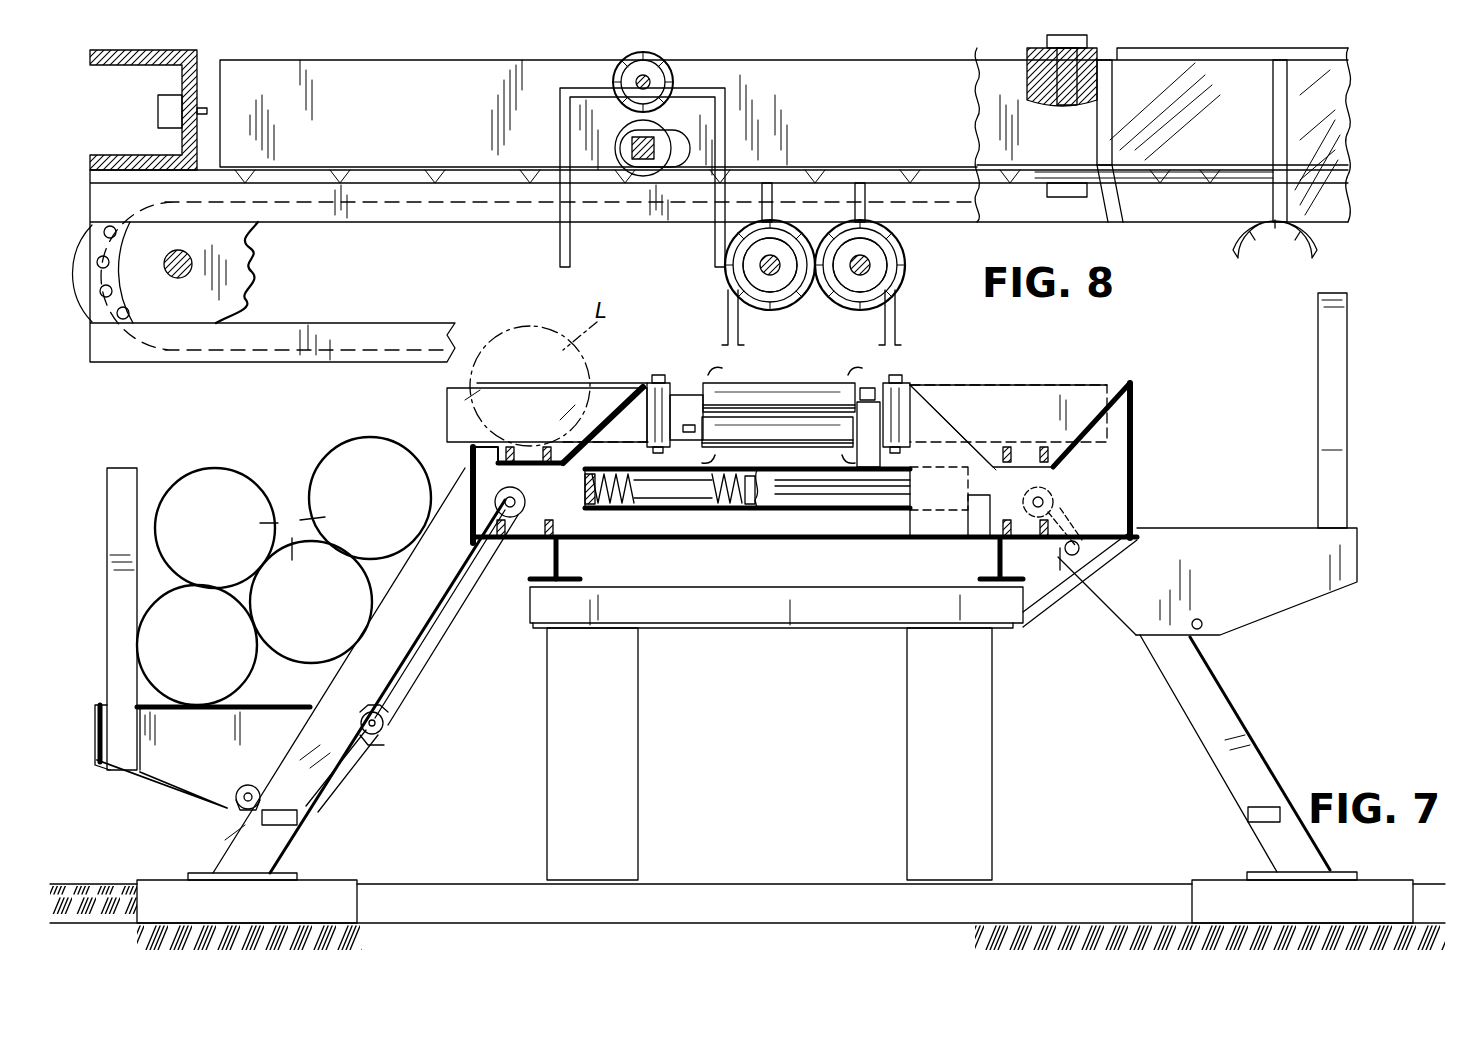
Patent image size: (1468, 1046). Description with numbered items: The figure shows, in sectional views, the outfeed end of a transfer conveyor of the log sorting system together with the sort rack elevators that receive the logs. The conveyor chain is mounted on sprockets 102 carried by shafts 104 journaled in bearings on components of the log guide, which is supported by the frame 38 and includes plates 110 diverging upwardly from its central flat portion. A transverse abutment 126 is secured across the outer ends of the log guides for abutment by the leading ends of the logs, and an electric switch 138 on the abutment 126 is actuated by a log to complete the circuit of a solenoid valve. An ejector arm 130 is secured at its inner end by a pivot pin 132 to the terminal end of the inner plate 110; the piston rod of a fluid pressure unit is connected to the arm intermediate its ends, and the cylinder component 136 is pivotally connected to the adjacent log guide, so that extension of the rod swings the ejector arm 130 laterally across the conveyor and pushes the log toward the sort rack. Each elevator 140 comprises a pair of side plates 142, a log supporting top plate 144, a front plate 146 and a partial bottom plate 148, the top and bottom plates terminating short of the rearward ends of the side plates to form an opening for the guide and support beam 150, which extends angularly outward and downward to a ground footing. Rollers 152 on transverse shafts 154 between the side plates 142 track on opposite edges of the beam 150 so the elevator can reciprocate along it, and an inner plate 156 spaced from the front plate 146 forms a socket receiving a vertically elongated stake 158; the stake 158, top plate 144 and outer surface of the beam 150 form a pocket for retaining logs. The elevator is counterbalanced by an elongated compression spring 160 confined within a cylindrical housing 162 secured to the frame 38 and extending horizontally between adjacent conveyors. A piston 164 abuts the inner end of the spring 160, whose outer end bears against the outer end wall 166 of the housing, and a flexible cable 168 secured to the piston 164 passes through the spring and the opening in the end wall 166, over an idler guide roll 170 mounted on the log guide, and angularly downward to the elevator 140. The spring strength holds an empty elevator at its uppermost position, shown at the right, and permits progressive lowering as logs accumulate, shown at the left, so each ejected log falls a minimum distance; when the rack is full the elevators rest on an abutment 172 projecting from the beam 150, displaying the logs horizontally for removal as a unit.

In FIG. 7, the frame 38 is at (935, 600).
In FIG. 8, the sprocket 102 is at (233, 258).
In FIG. 8, the shaft 104 is at (178, 278).
In FIG. 8, the plate 110 is at (1330, 108).
In FIG. 7, the plate 110 is at (626, 410).
In FIG. 8, the transverse abutment 126 is at (108, 66).
In FIG. 8, the ejector arm 130 is at (330, 76).
In FIG. 7, the ejector arm 130 is at (447, 405).
In FIG. 8, the pivot pin 132 is at (1078, 198).
In FIG. 7, the pivot pin 132 is at (657, 375).
In FIG. 8, the cylinder component 136 is at (628, 135).
In FIG. 7, the cylinder component 136 is at (770, 430).
In FIG. 8, the electric switch 138 is at (158, 111).
In FIG. 7, the elevator 140 is at (286, 477).
In FIG. 7, the side plate 142 is at (1300, 590).
In FIG. 7, the top plate 144 is at (265, 706).
In FIG. 7, the front plate 146 is at (95, 732).
In FIG. 7, the partial bottom plate 148 is at (172, 790).
In FIG. 7, the guide and support beam 150 is at (345, 680).
In FIG. 7, the roller 152 is at (378, 740).
In FIG. 7, the transverse shaft 154 is at (1200, 630).
In FIG. 7, the inner plate 156 is at (140, 740).
In FIG. 7, the stake 158 is at (108, 530).
In FIG. 8, the compression spring 160 is at (890, 268).
In FIG. 7, the compression spring 160 is at (670, 503).
In FIG. 8, the cylindrical housing 162 is at (858, 280).
In FIG. 7, the cylindrical housing 162 is at (830, 498).
In FIG. 7, the piston 164 is at (752, 495).
In FIG. 7, the outer end wall 166 is at (585, 503).
In FIG. 8, the flexible cable 168 is at (782, 275).
In FIG. 7, the flexible cable 168 is at (404, 656).
In FIG. 7, the idler guide roll 170 is at (505, 498).
In FIG. 7, the abutment 172 is at (290, 822).